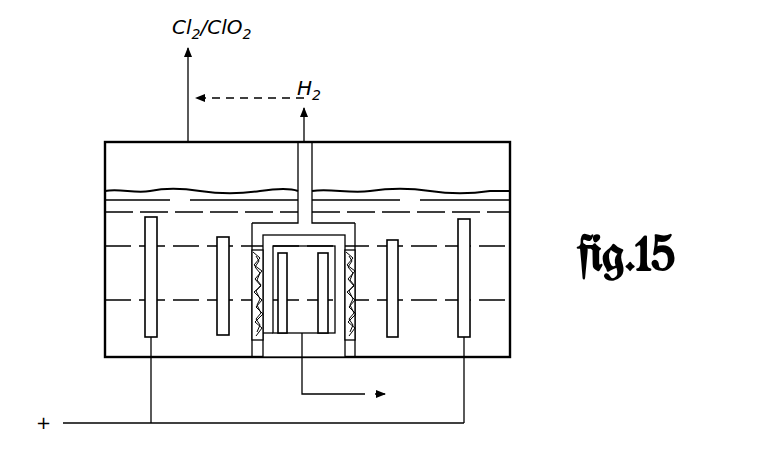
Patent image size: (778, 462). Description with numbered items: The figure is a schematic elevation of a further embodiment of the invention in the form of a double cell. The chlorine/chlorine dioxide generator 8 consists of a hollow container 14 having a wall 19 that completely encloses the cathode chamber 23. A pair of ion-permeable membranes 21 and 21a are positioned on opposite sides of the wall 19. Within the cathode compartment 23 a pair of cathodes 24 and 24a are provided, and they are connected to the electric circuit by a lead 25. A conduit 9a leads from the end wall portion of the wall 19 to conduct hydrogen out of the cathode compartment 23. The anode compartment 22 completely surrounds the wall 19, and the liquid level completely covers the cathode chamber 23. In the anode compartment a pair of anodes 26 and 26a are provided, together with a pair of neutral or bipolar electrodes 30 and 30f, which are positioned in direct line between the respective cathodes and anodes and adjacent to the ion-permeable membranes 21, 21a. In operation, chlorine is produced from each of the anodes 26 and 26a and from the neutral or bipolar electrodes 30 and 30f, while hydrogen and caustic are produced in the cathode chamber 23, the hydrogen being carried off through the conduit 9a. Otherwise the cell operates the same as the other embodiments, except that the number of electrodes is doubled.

The chlorine/chlorine dioxide generator 8 is at (532, 315).
The conduit 9a is at (298, 167).
The hollow container 14 is at (105, 308).
The wall 19 is at (327, 230).
The ion-permeable membrane 21 is at (253, 280).
The ion-permeable membrane 21a is at (357, 270).
The anode compartment 22 is at (128, 227).
The cathode chamber 23 is at (285, 345).
The cathode 24 is at (283, 317).
The cathode 24a is at (323, 270).
The lead 25 is at (303, 372).
The anode 26 is at (155, 325).
The anode 26a is at (460, 316).
The neutral or bipolar electrode 30 is at (223, 264).
The neutral or bipolar electrode 30f is at (395, 268).